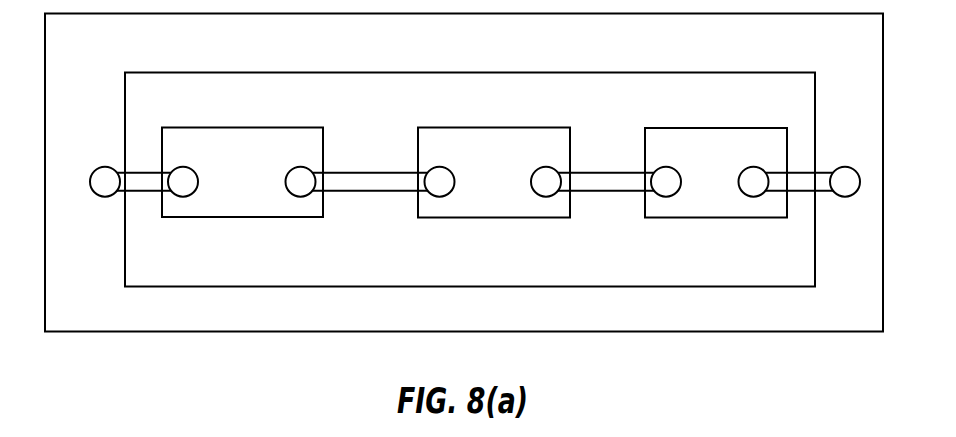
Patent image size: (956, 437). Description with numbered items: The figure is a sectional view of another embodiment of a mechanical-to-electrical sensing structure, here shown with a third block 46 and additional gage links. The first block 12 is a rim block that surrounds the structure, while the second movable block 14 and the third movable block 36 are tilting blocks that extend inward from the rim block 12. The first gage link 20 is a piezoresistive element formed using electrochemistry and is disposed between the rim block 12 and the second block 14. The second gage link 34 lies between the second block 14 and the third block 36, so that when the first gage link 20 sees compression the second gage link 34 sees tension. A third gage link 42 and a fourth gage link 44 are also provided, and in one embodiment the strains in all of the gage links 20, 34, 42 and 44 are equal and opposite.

The first movable block 12 is at (196, 278).
The second movable block 14 is at (259, 188).
The first gage link 20 is at (145, 192).
The second gage link 34 is at (370, 192).
The third movable block 36 is at (733, 188).
The third gage link 42 is at (607, 193).
The fourth gage link 44 is at (799, 193).
The third block 46 is at (512, 188).